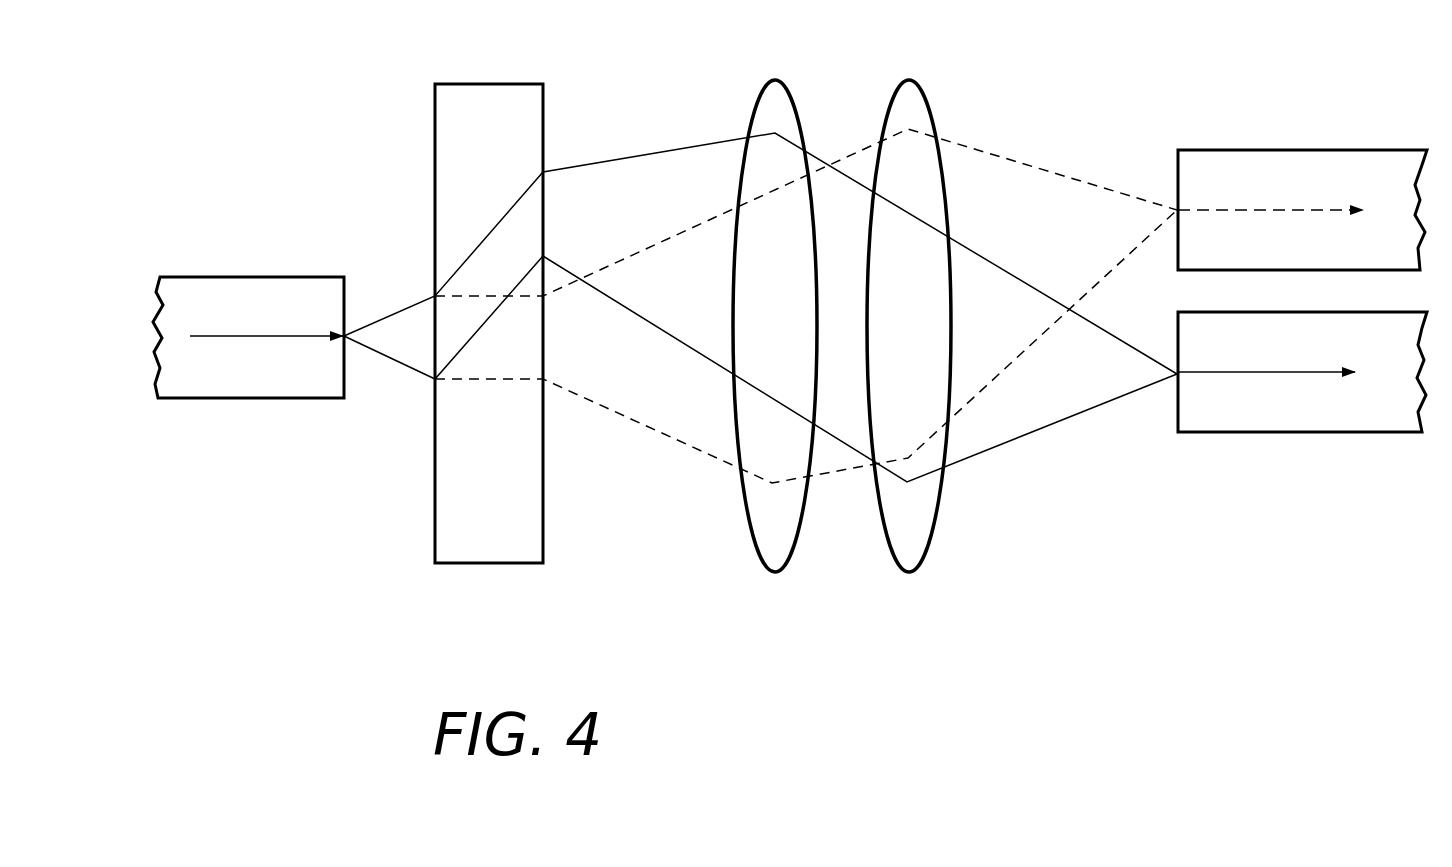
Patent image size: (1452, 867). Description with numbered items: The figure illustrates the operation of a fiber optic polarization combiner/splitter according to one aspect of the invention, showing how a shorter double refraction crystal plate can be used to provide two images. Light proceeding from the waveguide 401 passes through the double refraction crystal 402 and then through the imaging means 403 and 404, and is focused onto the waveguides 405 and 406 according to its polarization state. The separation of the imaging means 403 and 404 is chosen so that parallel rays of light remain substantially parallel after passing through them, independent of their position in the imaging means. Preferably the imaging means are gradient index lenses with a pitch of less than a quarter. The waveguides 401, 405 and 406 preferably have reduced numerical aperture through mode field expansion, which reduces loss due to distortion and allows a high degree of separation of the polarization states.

The waveguide 401 is at (232, 290).
The double refraction crystal 402 is at (450, 90).
The imaging means 403 is at (771, 95).
The imaging means 404 is at (910, 95).
The waveguide 405 is at (1218, 155).
The waveguide 406 is at (1236, 422).